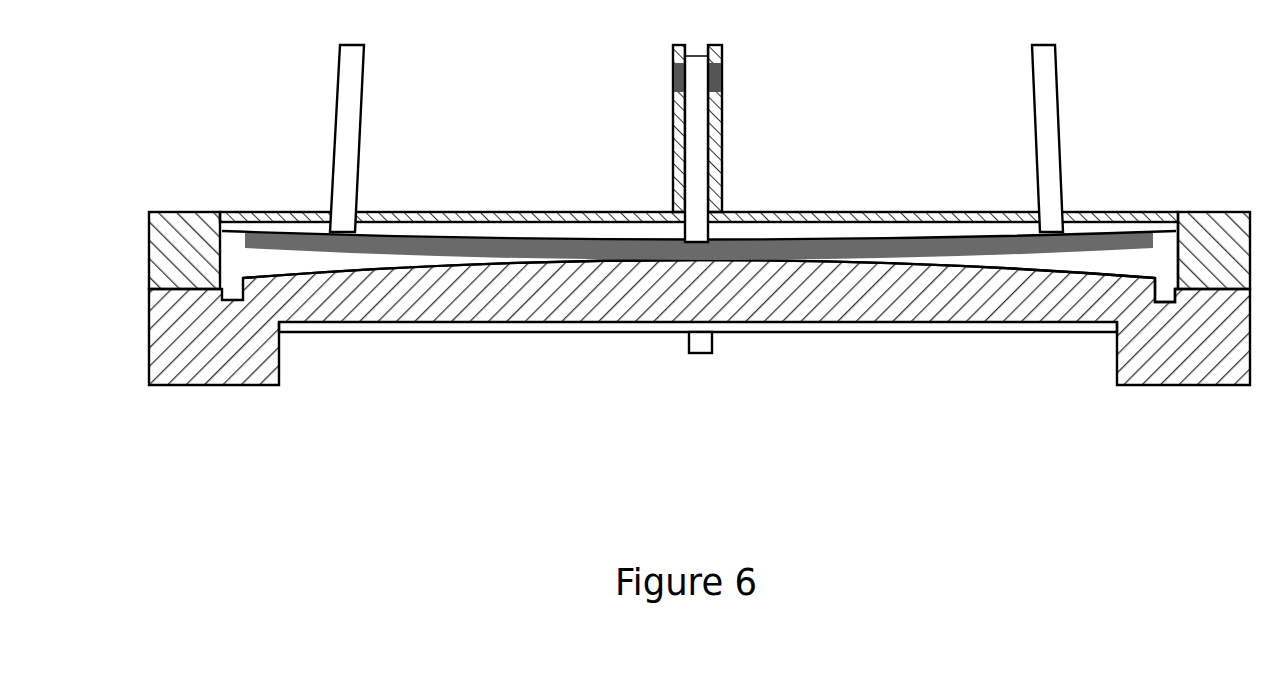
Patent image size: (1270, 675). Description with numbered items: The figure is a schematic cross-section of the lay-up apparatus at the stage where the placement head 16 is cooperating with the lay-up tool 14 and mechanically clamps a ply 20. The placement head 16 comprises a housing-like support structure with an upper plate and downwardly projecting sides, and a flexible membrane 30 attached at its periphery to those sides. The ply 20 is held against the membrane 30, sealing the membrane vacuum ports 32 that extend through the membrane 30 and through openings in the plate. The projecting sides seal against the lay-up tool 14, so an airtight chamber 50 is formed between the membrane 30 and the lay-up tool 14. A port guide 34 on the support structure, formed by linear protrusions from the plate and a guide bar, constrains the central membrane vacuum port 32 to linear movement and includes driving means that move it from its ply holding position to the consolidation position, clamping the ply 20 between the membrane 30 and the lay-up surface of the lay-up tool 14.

The lay-up tool 14 is at (1205, 387).
The placement head 16 is at (197, 212).
The ply 20 is at (902, 245).
The flexible membrane 30 is at (487, 238).
The membrane vacuum port 32 is at (698, 120).
The port guide 34 is at (717, 140).
The airtight chamber 50 is at (1135, 262).